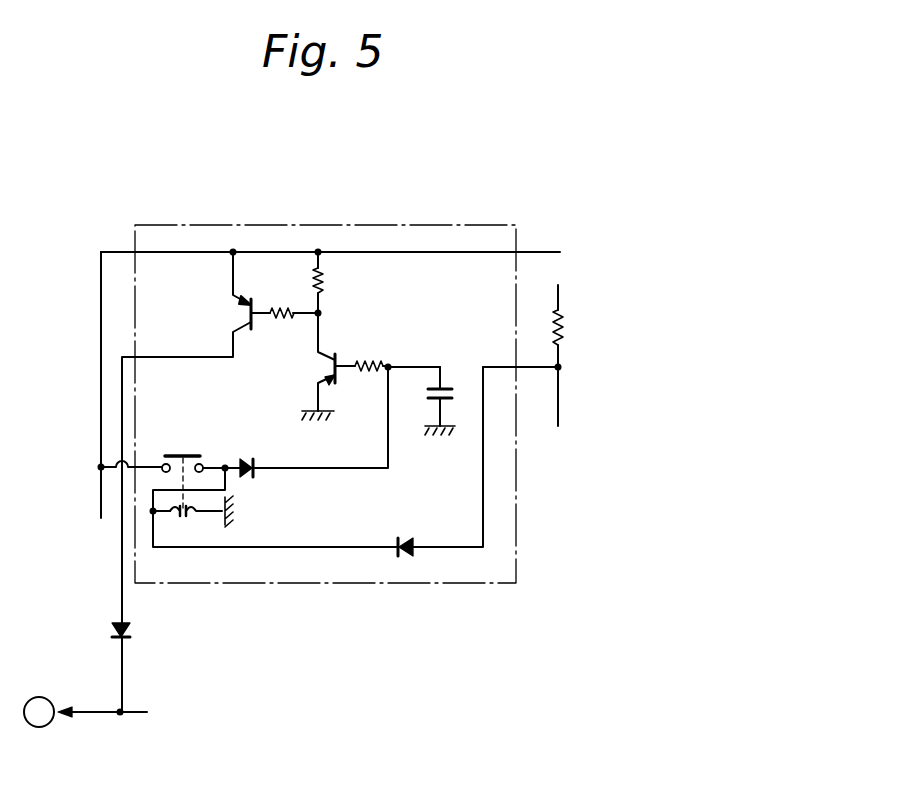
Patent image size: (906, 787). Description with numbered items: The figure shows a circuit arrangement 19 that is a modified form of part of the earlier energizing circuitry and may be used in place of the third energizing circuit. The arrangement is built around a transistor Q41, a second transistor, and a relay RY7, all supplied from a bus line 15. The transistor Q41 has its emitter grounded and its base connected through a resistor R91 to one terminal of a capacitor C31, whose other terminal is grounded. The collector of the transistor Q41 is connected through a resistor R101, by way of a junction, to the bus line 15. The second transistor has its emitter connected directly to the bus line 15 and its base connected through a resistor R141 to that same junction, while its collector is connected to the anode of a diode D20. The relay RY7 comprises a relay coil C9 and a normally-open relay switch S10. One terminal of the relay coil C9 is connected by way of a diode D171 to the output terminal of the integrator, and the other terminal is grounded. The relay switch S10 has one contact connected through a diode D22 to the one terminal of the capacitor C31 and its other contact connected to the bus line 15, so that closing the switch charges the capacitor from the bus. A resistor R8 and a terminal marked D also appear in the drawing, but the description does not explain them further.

The circuit arrangement 19 is at (390, 225).
The bus line 15 is at (183, 253).
The resistor R141 is at (281, 311).
The resistor R101 is at (322, 283).
The transistor Q41 is at (330, 370).
The resistor R91 is at (366, 358).
The capacitor C31 is at (430, 388).
The resistor R8 is at (562, 325).
The normally-open relay switch S10 is at (187, 454).
The diode D22 is at (246, 463).
The relay RY7 is at (234, 487).
The relay coil C9 is at (189, 514).
The diode D171 is at (401, 540).
The diode D20 is at (133, 632).
The terminal D is at (48, 712).